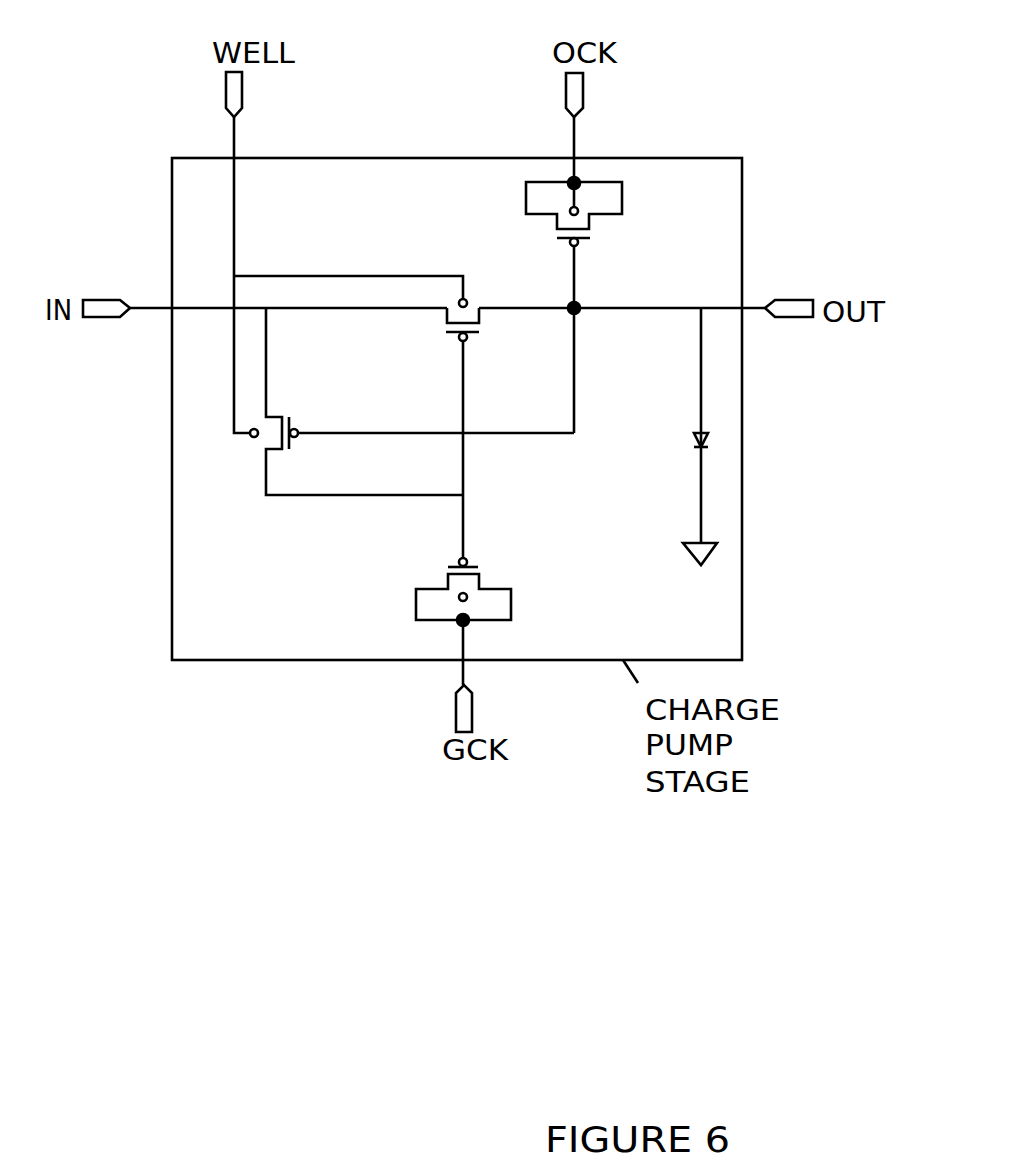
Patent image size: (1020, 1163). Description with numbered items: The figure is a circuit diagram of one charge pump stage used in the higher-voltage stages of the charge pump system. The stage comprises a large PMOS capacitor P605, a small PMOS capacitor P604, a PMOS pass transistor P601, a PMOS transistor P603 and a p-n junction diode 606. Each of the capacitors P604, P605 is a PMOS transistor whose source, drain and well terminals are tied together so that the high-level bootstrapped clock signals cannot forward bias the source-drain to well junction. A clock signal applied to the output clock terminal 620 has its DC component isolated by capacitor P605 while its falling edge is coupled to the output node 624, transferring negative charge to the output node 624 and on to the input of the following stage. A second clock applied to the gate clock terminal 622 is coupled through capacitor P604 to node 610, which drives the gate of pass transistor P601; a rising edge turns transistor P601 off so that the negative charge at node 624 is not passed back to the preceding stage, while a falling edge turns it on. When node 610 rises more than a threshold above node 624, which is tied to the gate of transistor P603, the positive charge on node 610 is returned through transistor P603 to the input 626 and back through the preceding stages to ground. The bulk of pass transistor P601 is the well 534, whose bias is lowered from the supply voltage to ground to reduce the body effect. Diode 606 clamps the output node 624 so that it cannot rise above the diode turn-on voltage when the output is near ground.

The WELL 534 is at (234, 222).
The IN 626 is at (212, 307).
The OCK clock terminal 620 is at (574, 183).
The output node 624 is at (720, 309).
The node 610 is at (465, 518).
The GCK clock terminal 622 is at (465, 653).
The p-n junction diode 606 is at (695, 440).
The PMOS pass transistor P601 is at (445, 317).
The PMOS transistor P603 is at (280, 413).
The small PMOS capacitor P604 is at (483, 578).
The large PMOS capacitor P605 is at (557, 222).